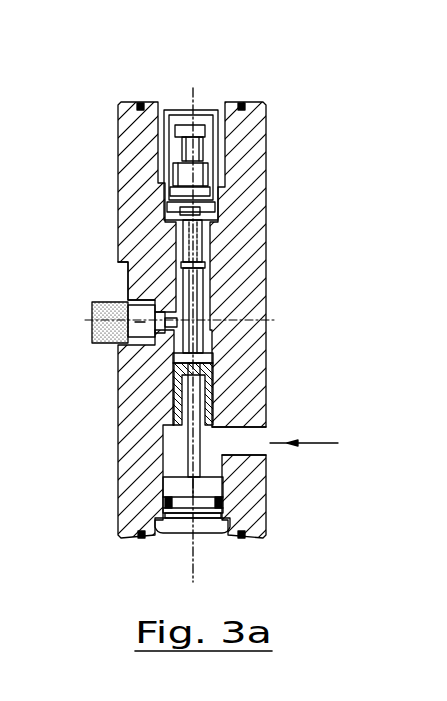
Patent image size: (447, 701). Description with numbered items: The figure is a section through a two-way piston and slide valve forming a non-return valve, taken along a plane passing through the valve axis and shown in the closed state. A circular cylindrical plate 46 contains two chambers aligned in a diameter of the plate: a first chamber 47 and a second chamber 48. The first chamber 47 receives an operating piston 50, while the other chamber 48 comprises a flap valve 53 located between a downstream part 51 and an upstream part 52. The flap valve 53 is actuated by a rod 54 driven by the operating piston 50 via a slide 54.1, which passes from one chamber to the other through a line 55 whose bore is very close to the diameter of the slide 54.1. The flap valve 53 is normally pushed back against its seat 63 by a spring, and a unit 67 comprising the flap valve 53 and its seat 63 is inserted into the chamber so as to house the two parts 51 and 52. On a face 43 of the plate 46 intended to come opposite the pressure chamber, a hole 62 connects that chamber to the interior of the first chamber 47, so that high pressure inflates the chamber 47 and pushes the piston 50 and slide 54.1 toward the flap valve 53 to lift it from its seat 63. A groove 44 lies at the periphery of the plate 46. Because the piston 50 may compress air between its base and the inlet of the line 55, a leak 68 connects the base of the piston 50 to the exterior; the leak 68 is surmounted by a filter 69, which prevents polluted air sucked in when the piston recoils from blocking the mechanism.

The face 43 is at (267, 325).
The groove 44 is at (180, 542).
The circular cylindrical plate 46 is at (267, 296).
The first chamber 47 is at (172, 448).
The second chamber 48 is at (207, 110).
The operating piston 50 is at (220, 418).
The downstream part 51 is at (198, 108).
The upstream part 52 is at (213, 232).
The flap valve 53 is at (188, 122).
The rod 54 is at (180, 234).
The slide 54.1 is at (197, 280).
The line 55 is at (122, 288).
The hole 62 is at (248, 447).
The seat 63 is at (213, 138).
The unit 67 is at (215, 177).
The leak 68 is at (120, 348).
The filter 69 is at (92, 303).